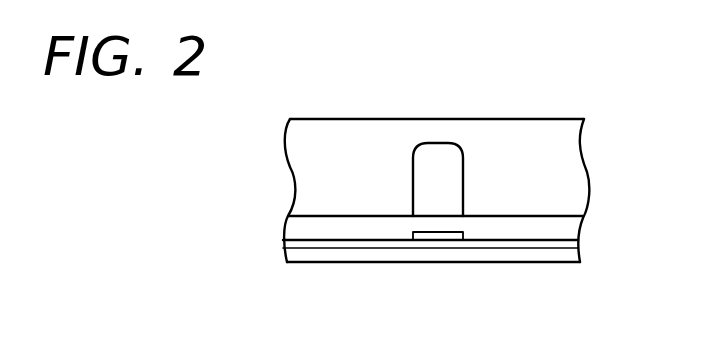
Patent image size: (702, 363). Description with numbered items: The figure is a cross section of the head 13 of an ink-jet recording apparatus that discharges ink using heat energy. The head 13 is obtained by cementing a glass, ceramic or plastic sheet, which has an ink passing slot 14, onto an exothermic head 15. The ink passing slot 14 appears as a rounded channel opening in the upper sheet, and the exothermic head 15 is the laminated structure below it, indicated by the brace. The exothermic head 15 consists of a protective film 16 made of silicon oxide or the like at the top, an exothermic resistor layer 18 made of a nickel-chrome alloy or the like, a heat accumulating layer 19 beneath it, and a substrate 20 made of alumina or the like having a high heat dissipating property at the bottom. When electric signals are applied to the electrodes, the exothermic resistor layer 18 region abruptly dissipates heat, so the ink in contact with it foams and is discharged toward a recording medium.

The head 13 is at (343, 119).
The ink passing slot 14 is at (440, 143).
The exothermic head 15 is at (588, 218).
The protective film 16 is at (365, 222).
The exothermic resistor layer 18 is at (440, 236).
The heat accumulating layer 19 is at (483, 245).
The substrate 20 is at (535, 257).